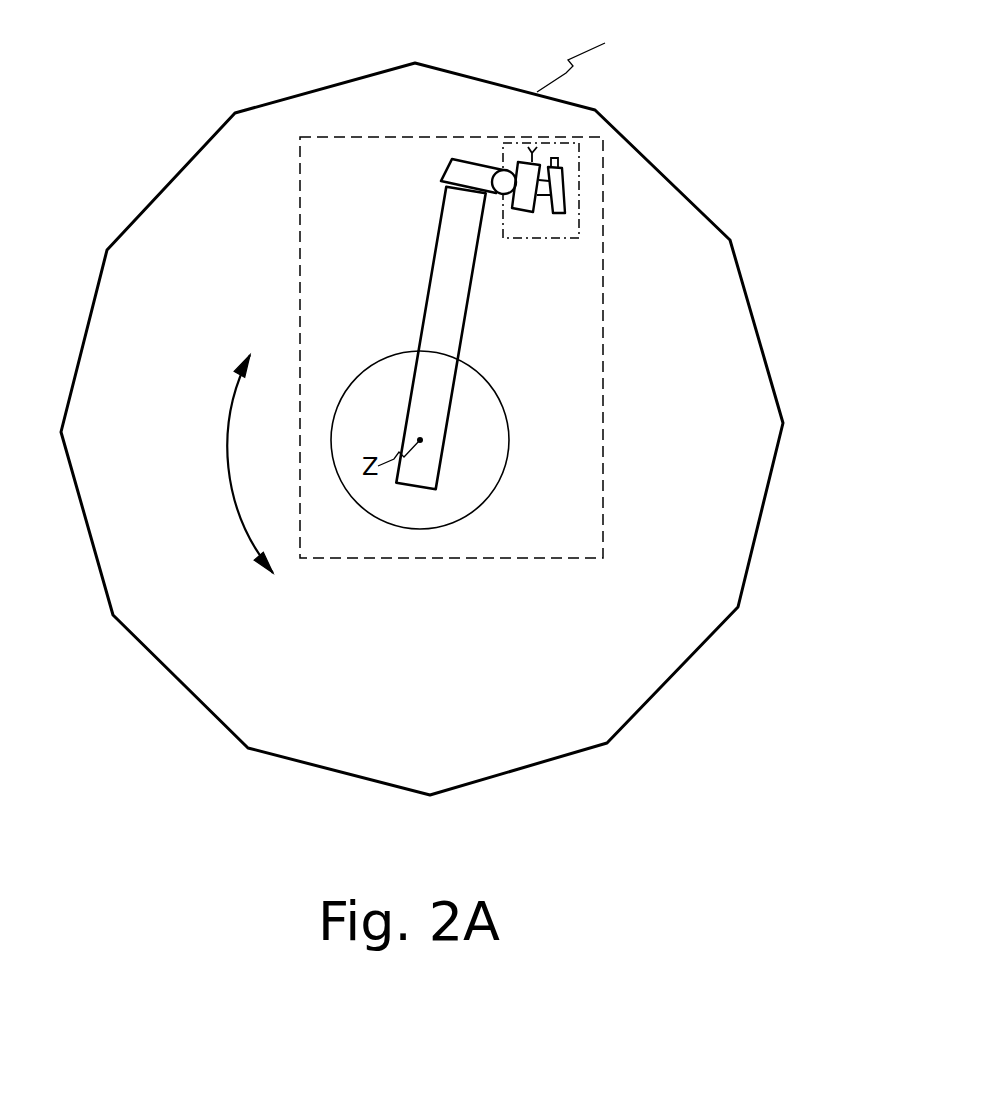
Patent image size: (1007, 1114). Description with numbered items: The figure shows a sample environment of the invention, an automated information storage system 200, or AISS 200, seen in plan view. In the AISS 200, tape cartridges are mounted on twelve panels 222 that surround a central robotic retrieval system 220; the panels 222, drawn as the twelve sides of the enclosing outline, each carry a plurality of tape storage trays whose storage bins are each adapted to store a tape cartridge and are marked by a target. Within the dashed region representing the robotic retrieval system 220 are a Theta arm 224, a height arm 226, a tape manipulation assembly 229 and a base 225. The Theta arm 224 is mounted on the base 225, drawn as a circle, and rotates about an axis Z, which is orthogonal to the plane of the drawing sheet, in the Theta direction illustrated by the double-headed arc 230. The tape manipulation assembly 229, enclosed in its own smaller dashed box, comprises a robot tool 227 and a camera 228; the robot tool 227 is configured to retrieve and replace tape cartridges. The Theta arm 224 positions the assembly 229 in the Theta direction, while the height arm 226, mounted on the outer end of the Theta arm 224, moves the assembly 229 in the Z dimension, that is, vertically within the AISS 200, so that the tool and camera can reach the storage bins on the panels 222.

The automated information storage system 200 is at (422, 478).
The robotic retrieval system 220 is at (495, 347).
The panels 222 is at (588, 70).
The Theta arm 224 is at (475, 338).
The base 225 is at (464, 440).
The height arm 226 is at (436, 173).
The robot tool 227 is at (543, 218).
The camera 228 is at (604, 188).
The tape manipulation assembly 229 is at (599, 180).
The arc 230 is at (208, 450).